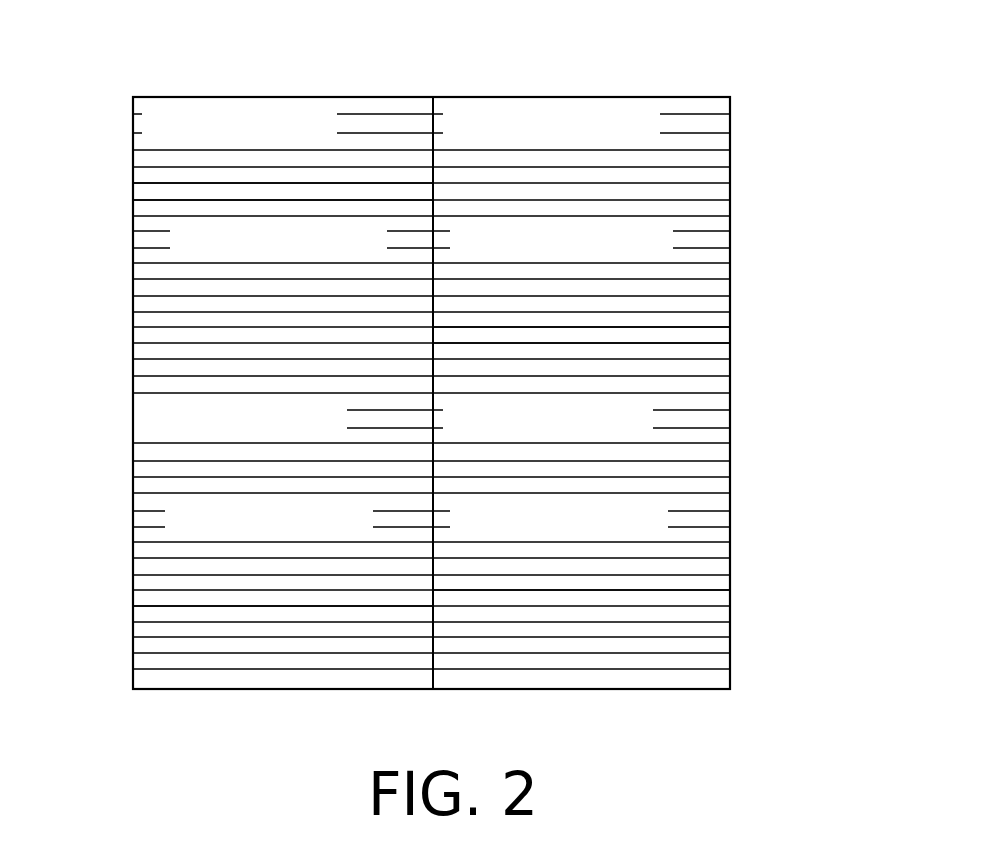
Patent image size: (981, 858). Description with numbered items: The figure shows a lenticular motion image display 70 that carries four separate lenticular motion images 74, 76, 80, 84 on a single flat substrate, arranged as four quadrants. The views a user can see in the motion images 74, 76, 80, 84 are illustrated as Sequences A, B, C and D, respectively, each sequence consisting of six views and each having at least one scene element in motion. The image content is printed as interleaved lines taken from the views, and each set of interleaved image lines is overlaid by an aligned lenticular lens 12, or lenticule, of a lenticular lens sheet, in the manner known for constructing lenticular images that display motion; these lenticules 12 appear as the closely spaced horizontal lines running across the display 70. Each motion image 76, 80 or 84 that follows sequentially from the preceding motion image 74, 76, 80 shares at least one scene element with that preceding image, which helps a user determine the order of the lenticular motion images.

The display 70 is at (762, 155).
The lenticular motion image 74 is at (318, 99).
The lenticular motion image 76 is at (731, 270).
The lenticular motion image 80 is at (132, 568).
The lenticular motion image 84 is at (733, 553).
The lenticular lens 12 is at (146, 186).